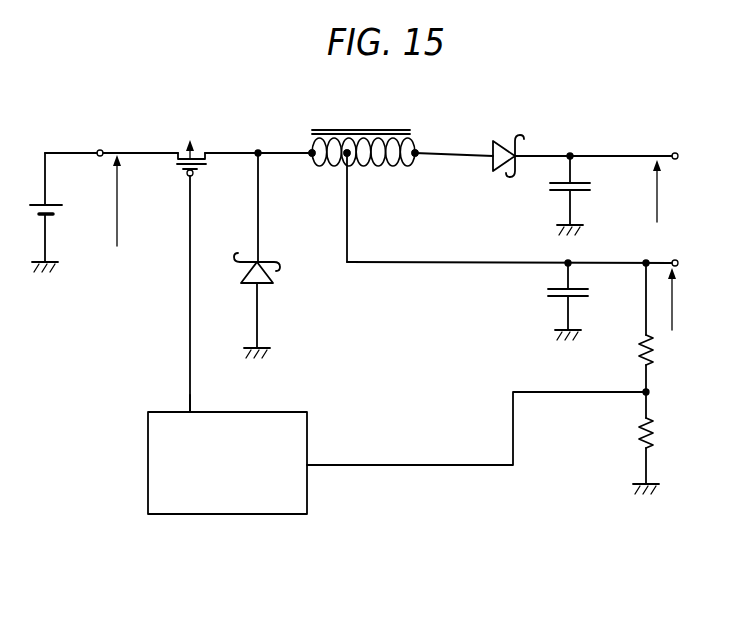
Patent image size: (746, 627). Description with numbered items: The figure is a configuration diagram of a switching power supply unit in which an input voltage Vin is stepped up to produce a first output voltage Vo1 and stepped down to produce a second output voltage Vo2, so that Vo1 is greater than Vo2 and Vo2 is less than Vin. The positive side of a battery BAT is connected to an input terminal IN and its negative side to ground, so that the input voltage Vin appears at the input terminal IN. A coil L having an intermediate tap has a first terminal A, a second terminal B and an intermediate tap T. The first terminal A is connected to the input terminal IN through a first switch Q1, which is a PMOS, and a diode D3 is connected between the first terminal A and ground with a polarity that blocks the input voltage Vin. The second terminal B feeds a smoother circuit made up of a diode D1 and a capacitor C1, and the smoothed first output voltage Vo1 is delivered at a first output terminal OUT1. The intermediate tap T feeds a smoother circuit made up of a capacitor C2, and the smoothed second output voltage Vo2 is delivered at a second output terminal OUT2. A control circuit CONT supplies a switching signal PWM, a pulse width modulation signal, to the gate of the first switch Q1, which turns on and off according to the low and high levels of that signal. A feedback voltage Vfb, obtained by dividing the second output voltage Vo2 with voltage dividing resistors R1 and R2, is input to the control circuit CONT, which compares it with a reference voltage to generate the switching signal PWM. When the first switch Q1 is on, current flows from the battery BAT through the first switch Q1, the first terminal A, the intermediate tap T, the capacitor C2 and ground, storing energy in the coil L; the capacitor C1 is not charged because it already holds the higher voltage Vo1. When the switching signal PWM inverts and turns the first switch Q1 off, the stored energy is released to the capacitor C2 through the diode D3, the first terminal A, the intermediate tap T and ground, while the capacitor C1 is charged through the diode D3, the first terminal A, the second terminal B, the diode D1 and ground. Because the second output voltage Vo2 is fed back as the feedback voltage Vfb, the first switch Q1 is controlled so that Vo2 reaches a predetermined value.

The input terminal IN is at (98, 141).
The battery BAT is at (59, 212).
The input voltage Vin is at (132, 200).
The first switch Q1 is at (191, 145).
The diode D3 is at (246, 305).
The coil L is at (363, 136).
The first terminal A is at (303, 143).
The second terminal B is at (423, 143).
The intermediate tap T is at (340, 172).
The diode D1 is at (508, 143).
The capacitor C1 is at (585, 195).
The first output terminal OUT1 is at (702, 156).
The first output voltage Vo1 is at (675, 191).
The capacitor C2 is at (583, 301).
The second output terminal OUT2 is at (702, 263).
The second output voltage Vo2 is at (689, 299).
The voltage dividing resistor R1 is at (630, 327).
The voltage dividing resistor R2 is at (632, 443).
The feedback voltage Vfb is at (476, 428).
The control circuit CONT is at (307, 437).
The switching signal PWM is at (215, 398).